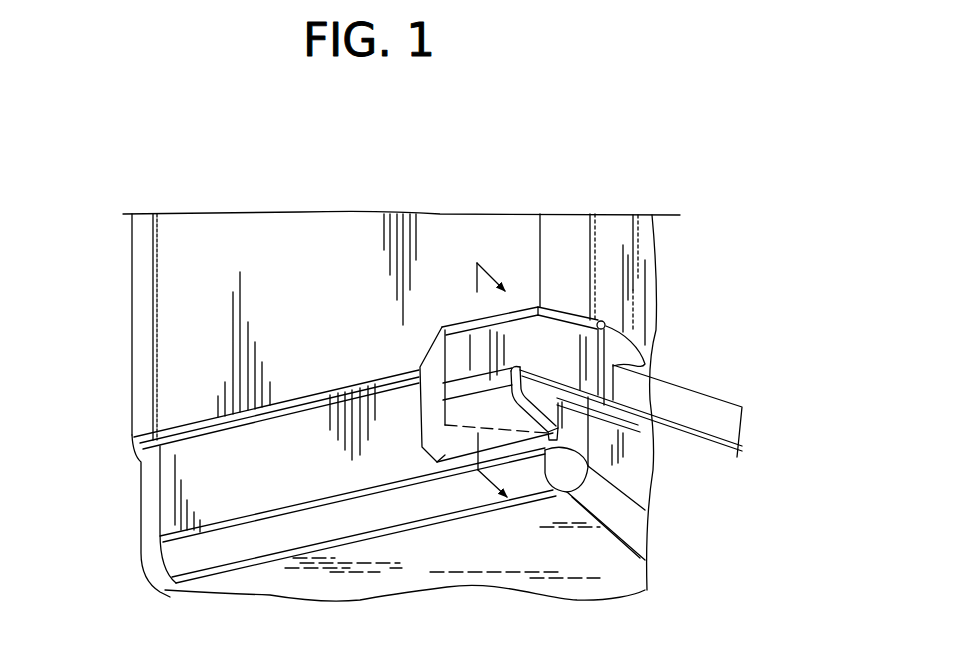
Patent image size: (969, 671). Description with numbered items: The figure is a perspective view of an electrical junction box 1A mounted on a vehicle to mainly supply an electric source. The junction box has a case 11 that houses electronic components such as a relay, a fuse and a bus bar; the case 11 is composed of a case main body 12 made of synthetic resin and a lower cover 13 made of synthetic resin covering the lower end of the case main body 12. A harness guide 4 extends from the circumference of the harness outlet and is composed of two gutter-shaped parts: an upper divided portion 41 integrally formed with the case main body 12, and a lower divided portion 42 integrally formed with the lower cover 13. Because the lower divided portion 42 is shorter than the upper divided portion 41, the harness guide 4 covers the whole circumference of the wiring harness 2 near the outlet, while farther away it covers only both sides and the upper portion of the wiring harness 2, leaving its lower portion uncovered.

The electrical junction box 1A is at (662, 147).
The case 11 is at (125, 268).
The case main body 12 is at (130, 332).
The lower cover 13 is at (140, 515).
The upper divided portion 41 is at (458, 323).
The harness guide 4 is at (577, 310).
The lower divided portion 42 is at (455, 440).
The wiring harness 2 is at (690, 392).